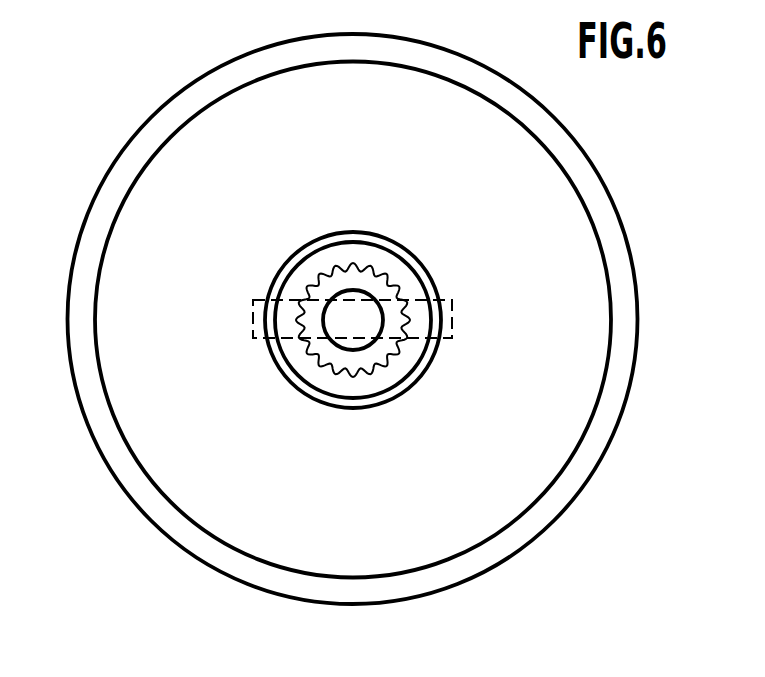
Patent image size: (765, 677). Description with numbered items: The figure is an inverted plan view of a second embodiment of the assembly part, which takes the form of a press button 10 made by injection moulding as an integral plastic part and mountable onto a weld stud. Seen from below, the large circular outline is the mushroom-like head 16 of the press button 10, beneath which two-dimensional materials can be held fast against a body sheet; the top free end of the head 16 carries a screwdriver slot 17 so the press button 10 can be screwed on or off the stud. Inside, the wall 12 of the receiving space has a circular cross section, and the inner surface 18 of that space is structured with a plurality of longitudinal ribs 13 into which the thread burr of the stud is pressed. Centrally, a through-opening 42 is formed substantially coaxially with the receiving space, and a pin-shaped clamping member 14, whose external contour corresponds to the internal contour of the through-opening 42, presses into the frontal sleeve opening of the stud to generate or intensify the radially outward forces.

The press button 10 is at (214, 405).
The mushroom-like head 16 is at (498, 517).
The screwdriver slot 17 is at (442, 333).
The wall of the receiving space 12 is at (386, 372).
The inner surface of the receiving space 18 is at (315, 288).
The pin / clamping member 14 is at (353, 295).
The through-opening 42 is at (353, 320).
The longitudinal ribs 13 is at (333, 363).